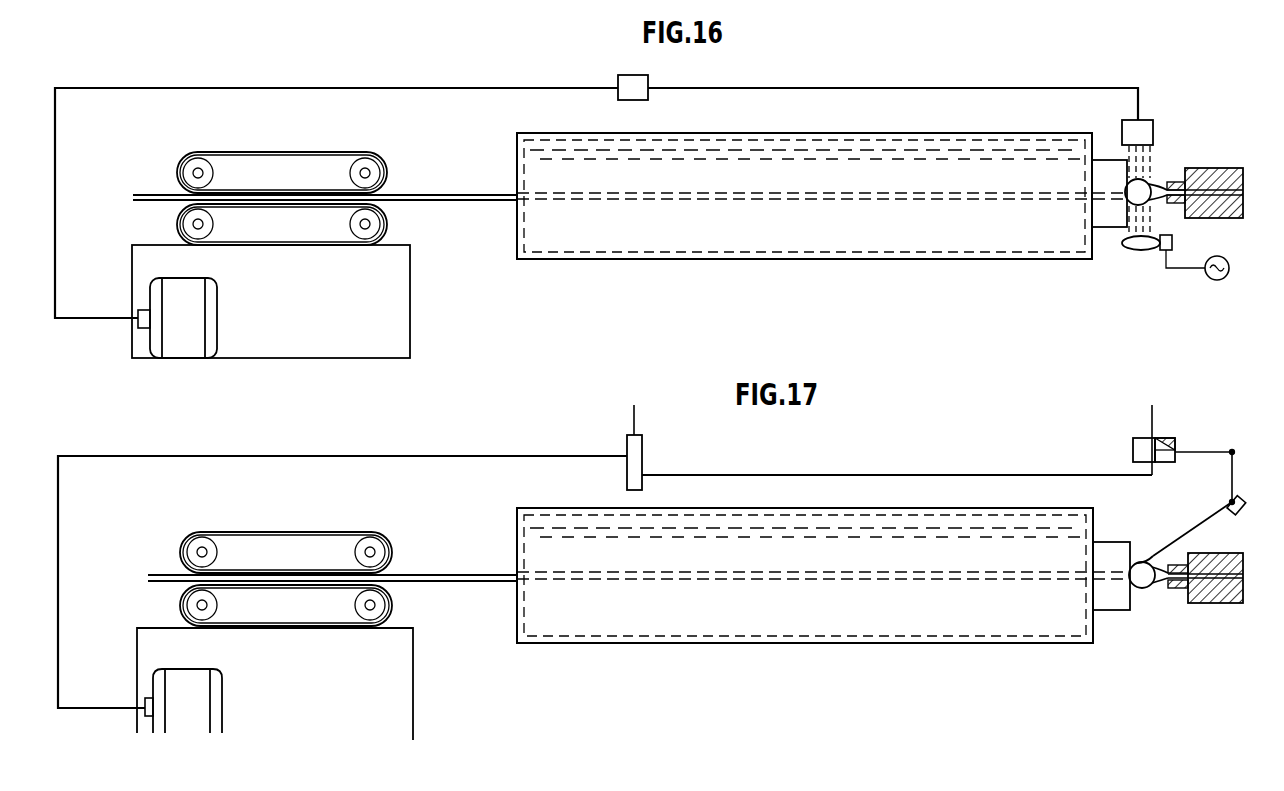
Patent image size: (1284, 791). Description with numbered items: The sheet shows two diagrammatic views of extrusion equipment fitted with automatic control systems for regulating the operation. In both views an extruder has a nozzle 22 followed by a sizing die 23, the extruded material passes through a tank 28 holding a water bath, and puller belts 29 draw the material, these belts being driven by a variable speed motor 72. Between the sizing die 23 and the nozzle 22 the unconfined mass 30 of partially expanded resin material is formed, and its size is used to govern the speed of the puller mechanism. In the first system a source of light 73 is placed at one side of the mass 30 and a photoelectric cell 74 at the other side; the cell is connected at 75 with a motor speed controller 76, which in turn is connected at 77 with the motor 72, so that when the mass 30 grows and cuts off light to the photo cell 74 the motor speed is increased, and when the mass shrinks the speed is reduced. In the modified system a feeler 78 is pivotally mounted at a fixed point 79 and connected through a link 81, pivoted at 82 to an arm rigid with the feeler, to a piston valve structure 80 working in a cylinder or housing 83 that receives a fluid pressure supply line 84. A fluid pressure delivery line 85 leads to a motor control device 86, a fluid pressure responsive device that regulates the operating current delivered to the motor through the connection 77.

In FIG. 16, the nozzle 22 is at (1212, 168).
In FIG. 17, the nozzle 22 is at (1203, 603).
In FIG. 16, the sizing die 23 is at (1110, 230).
In FIG. 17, the sizing die 23 is at (1118, 612).
In FIG. 16, the tank 28 is at (780, 259).
In FIG. 17, the tank 28 is at (755, 645).
In FIG. 16, the puller belts 29 is at (290, 152).
In FIG. 17, the puller belts 29 is at (292, 531).
In FIG. 16, the unconfined mass 30 is at (1150, 178).
In FIG. 17, the unconfined mass 30 is at (1152, 590).
In FIG. 16, the variable speed motor 72 is at (180, 350).
In FIG. 17, the variable speed motor 72 is at (275, 684).
In FIG. 16, the source of light 73 is at (1140, 252).
In FIG. 16, the photoelectric cell 74 is at (1153, 128).
In FIG. 16, the connection 75 is at (962, 82).
In FIG. 16, the motor speed controller 76 is at (618, 78).
In FIG. 16, the connection 77 is at (315, 86).
In FIG. 17, the connection 77 is at (295, 455).
In FIG. 17, the feeler 78 is at (1198, 524).
In FIG. 17, the pivot 79 is at (1229, 500).
In FIG. 17, the piston valve structure 80 is at (1165, 440).
In FIG. 17, the link 81 is at (1210, 452).
In FIG. 17, the pivot 82 is at (1236, 452).
In FIG. 17, the cylinder or housing 83 is at (1133, 440).
In FIG. 17, the fluid pressure supply line 84 is at (1155, 413).
In FIG. 17, the fluid pressure delivery line 85 is at (922, 470).
In FIG. 17, the motor control device 86 is at (645, 460).